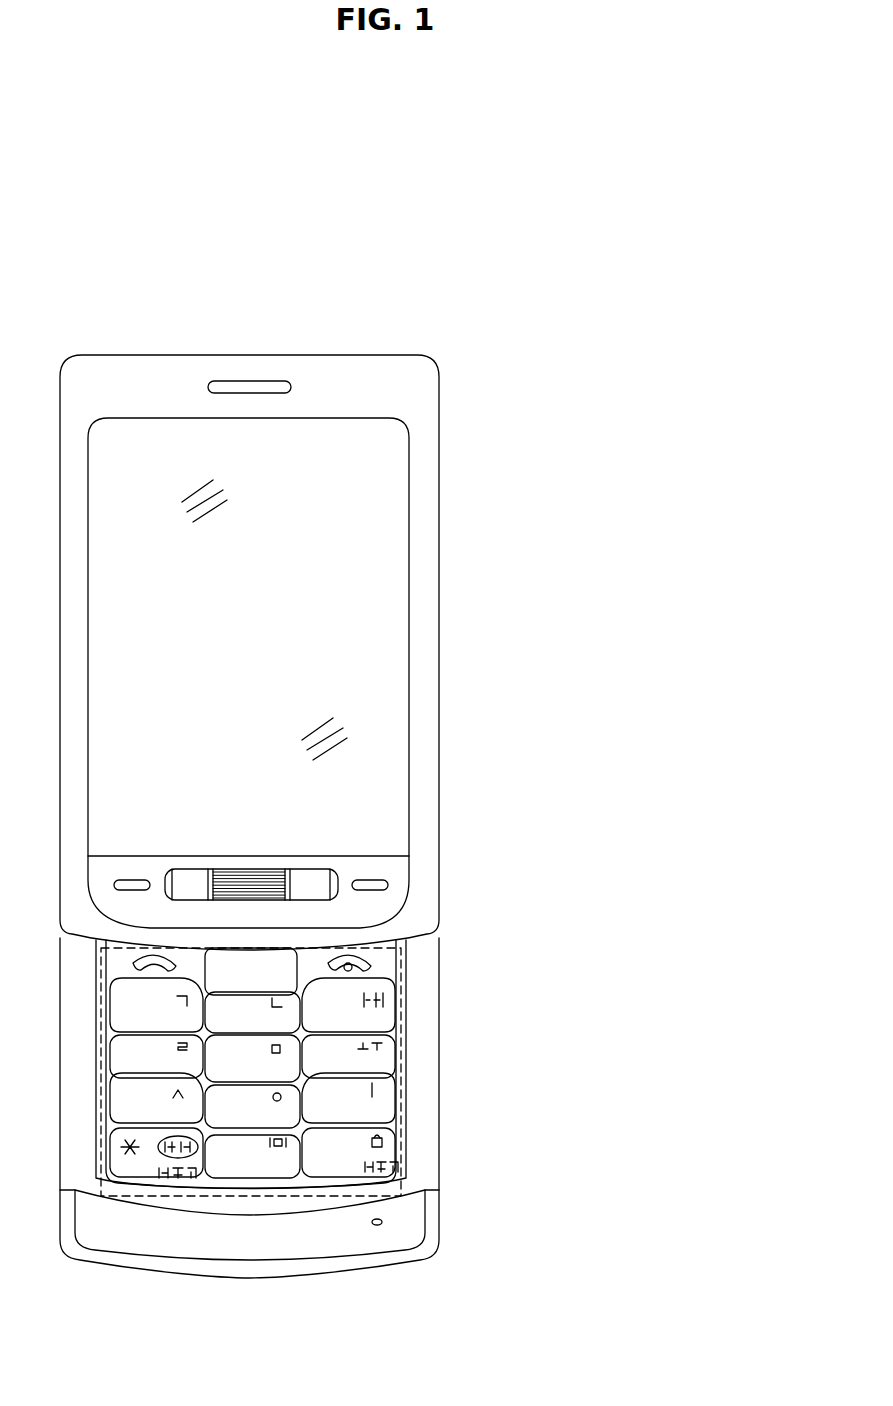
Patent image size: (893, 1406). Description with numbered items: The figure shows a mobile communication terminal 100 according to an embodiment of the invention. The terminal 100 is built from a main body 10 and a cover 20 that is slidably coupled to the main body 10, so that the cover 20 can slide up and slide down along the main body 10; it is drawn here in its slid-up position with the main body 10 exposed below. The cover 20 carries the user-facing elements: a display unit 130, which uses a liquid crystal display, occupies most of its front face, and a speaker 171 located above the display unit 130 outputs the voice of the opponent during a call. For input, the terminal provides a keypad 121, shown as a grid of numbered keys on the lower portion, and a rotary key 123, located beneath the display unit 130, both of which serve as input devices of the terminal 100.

The mobile communication terminal 100 is at (440, 303).
The cover 20 is at (439, 372).
The main body 10 is at (442, 962).
The display unit 130 is at (397, 624).
The speaker 171 is at (249, 382).
The rotary key 123 is at (308, 870).
The keypad 121 is at (410, 1046).